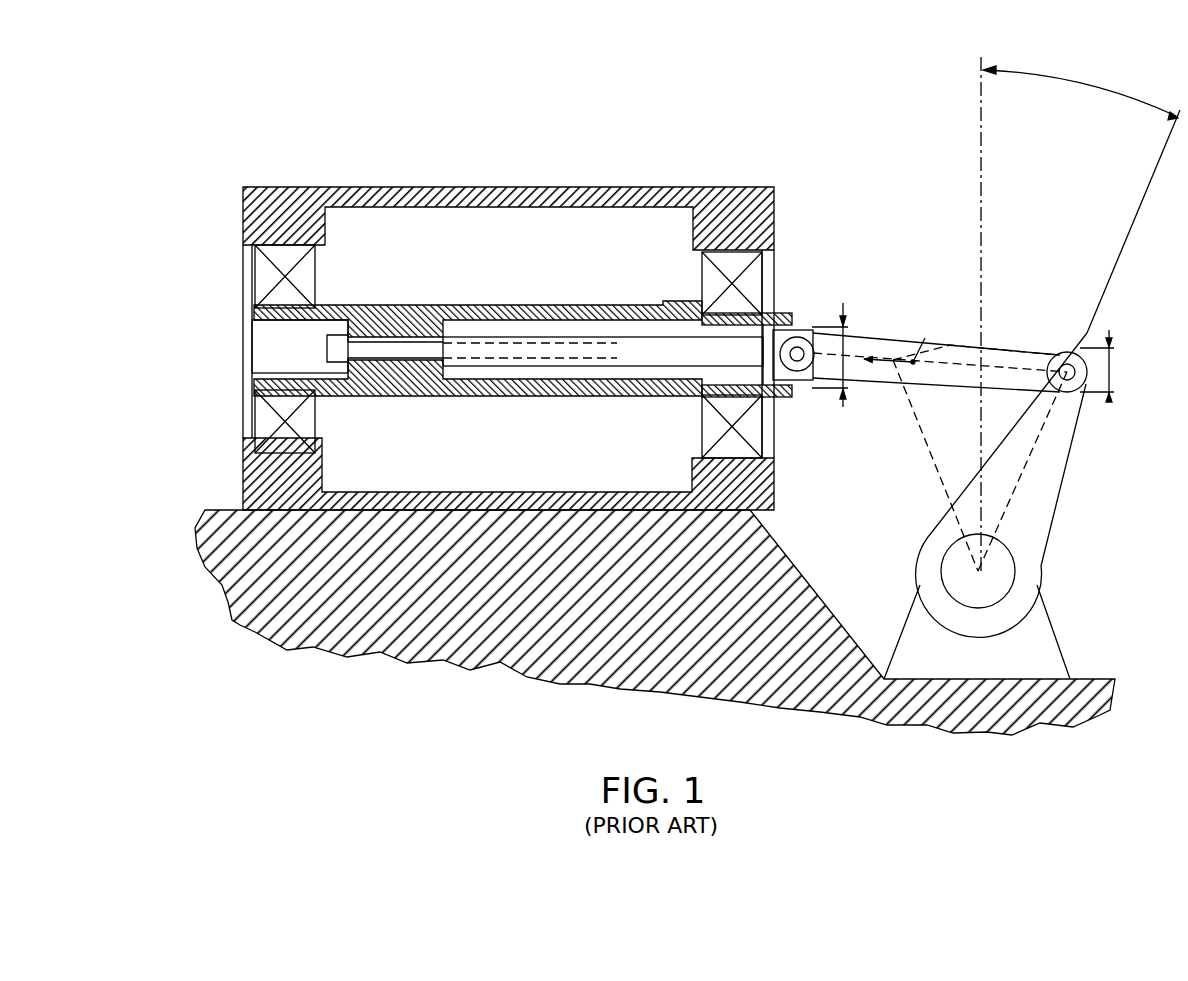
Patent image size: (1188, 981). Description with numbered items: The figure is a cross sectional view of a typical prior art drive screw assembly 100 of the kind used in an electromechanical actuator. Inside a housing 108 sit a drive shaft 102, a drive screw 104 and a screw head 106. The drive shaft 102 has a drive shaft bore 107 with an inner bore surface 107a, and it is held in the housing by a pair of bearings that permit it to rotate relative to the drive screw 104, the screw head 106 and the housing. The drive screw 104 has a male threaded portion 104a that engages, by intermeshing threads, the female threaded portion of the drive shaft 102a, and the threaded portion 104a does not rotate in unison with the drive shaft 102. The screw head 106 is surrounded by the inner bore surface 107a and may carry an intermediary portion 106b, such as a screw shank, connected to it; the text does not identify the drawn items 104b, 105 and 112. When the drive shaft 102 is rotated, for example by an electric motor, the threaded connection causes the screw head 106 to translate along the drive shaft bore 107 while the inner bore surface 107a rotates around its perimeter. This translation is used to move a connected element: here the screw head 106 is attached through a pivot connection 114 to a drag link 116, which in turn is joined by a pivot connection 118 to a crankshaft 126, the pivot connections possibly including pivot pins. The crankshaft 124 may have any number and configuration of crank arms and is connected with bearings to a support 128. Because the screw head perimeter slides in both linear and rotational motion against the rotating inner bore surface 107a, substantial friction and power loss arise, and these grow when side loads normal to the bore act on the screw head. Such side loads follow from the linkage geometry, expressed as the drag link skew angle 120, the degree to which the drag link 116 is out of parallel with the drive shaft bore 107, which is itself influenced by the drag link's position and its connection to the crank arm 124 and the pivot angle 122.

The drive screw assembly 100 is at (234, 762).
The drive shaft 102 is at (478, 308).
The female threaded portion of the drive shaft 102a is at (363, 337).
The drive screw 104 is at (598, 345).
The male threaded portion 104a is at (470, 348).
The screw shaft outer surface 104b is at (540, 367).
The shaft coupling 105 is at (328, 343).
The screw head 106 is at (629, 373).
The intermediary portion 106b is at (622, 360).
The drive shaft bore 107 is at (579, 316).
The inner bore surface 107a is at (680, 327).
The housing 108 is at (357, 187).
The output rod diameter 112 is at (845, 326).
The pivot connection 114 is at (800, 348).
The drag link 116 is at (1022, 353).
The pivot connection 118 is at (1082, 388).
The drag link skew angle 120 is at (1117, 355).
The pivot angle 122 is at (1085, 81).
The crankshaft 124 is at (1042, 533).
The crankshaft 126 is at (1007, 577).
The support 128 is at (1060, 640).